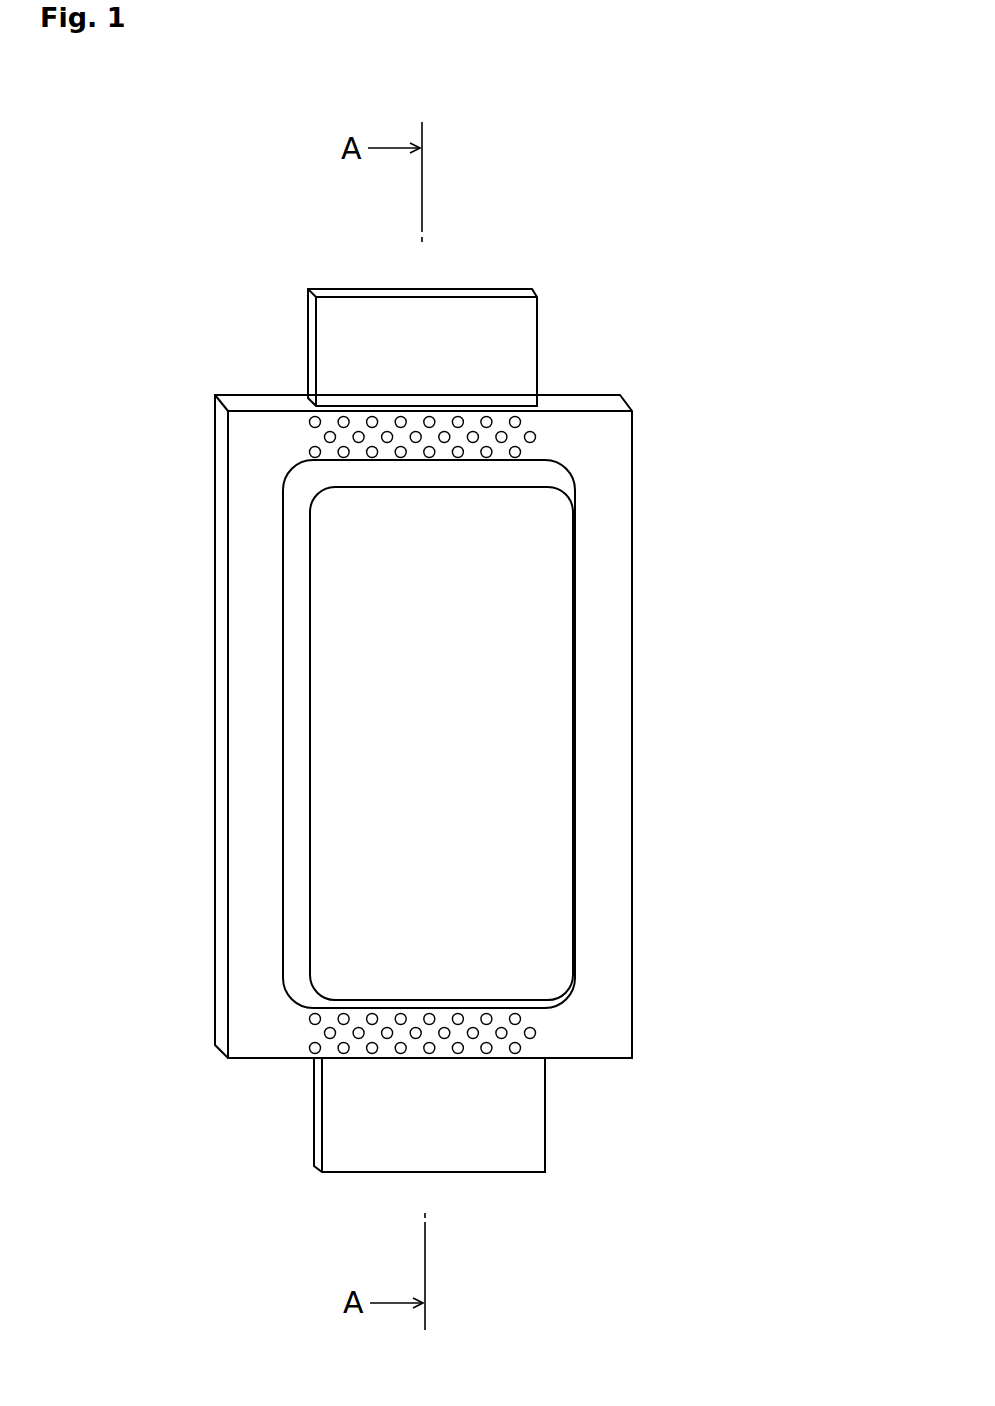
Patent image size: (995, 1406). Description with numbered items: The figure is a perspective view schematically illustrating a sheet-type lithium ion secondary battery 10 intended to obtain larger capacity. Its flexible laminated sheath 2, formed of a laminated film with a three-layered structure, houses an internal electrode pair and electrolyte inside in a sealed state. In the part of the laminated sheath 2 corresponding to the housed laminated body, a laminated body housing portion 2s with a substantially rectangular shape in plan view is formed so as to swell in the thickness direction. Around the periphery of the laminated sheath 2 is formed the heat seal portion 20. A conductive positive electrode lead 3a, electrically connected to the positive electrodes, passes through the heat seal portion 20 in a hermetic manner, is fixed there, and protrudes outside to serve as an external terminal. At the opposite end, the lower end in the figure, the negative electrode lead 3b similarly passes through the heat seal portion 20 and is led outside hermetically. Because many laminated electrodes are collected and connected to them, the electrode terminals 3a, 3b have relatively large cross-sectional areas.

The sheet-type lithium ion secondary battery 10 is at (650, 655).
The laminated sheath 2 is at (612, 972).
The laminated body housing portion 2s is at (547, 537).
The heat seal portion 20 is at (375, 1035).
The positive electrode lead 3a is at (332, 322).
The negative electrode lead 3b is at (520, 1139).